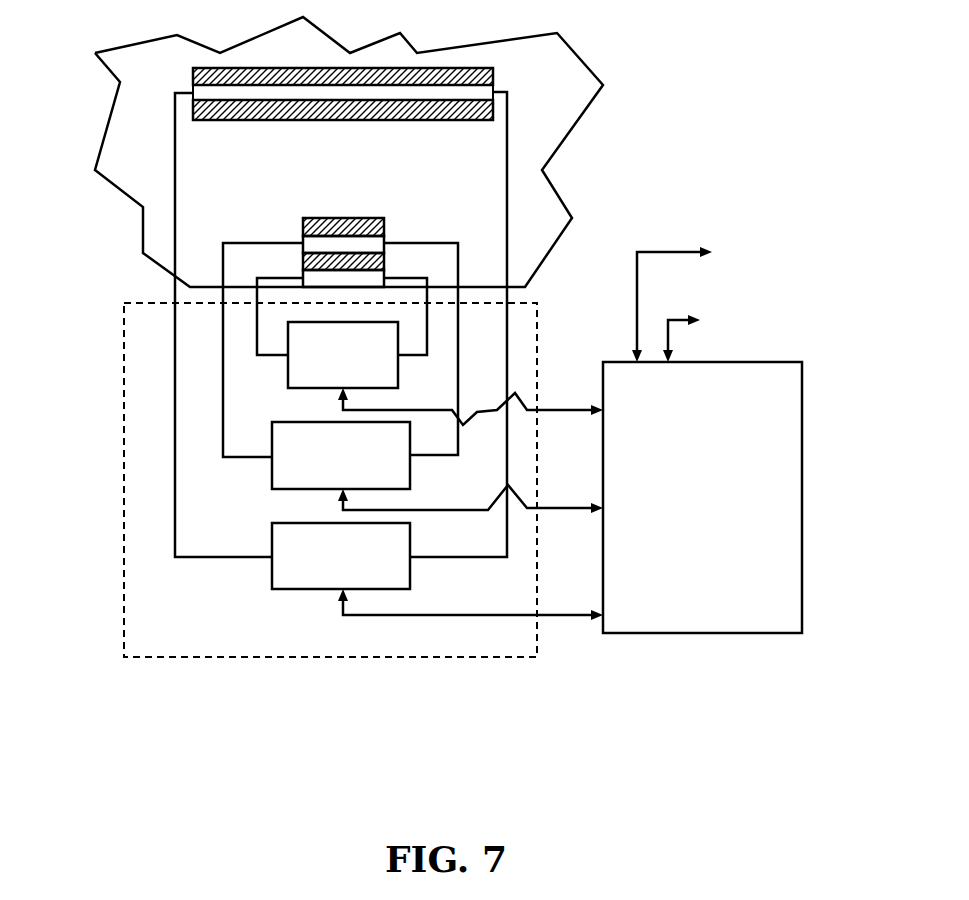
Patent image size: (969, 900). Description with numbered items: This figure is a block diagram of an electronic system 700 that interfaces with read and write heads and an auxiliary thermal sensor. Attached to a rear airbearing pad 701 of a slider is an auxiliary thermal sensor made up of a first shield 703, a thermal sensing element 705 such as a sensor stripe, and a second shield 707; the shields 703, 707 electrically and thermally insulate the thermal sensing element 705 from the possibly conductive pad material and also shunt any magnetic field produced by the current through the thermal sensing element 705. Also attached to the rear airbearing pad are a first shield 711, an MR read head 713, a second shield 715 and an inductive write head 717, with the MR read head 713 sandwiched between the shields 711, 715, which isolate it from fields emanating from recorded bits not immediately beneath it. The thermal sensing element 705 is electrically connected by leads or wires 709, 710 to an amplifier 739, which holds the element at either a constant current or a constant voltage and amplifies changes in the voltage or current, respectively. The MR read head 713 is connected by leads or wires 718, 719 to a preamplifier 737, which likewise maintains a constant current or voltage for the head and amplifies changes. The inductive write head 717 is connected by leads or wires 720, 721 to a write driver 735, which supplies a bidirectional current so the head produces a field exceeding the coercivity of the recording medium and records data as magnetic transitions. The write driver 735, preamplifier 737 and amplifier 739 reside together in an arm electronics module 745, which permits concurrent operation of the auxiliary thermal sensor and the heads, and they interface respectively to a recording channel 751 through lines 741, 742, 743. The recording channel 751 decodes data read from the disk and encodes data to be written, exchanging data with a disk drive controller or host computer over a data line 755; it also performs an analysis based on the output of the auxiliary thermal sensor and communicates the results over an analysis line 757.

The recording head test system 700 is at (723, 76).
The rear airbearing pad 701 is at (543, 207).
The first shield 703 is at (480, 77).
The thermal sensing element 705 is at (223, 95).
The second shield 707 is at (478, 113).
The lead 709 is at (508, 160).
The lead 710 is at (177, 167).
The first shield 711 is at (320, 230).
The MR read head 713 is at (367, 243).
The second shield 715 is at (323, 262).
The inductive write head 717 is at (372, 278).
The lead 718 is at (430, 466).
The lead 719 is at (242, 464).
The lead 720 is at (415, 363).
The lead 721 is at (265, 363).
The write driver 735 is at (300, 337).
The preamplifier 737 is at (293, 445).
The amplifier 739 is at (288, 543).
The line 741 is at (548, 408).
The line 742 is at (540, 505).
The line 743 is at (540, 615).
The arm electronics module 745 is at (539, 318).
The recording channel 751 is at (628, 635).
The data line 755 is at (655, 252).
The analysis line 757 is at (677, 318).